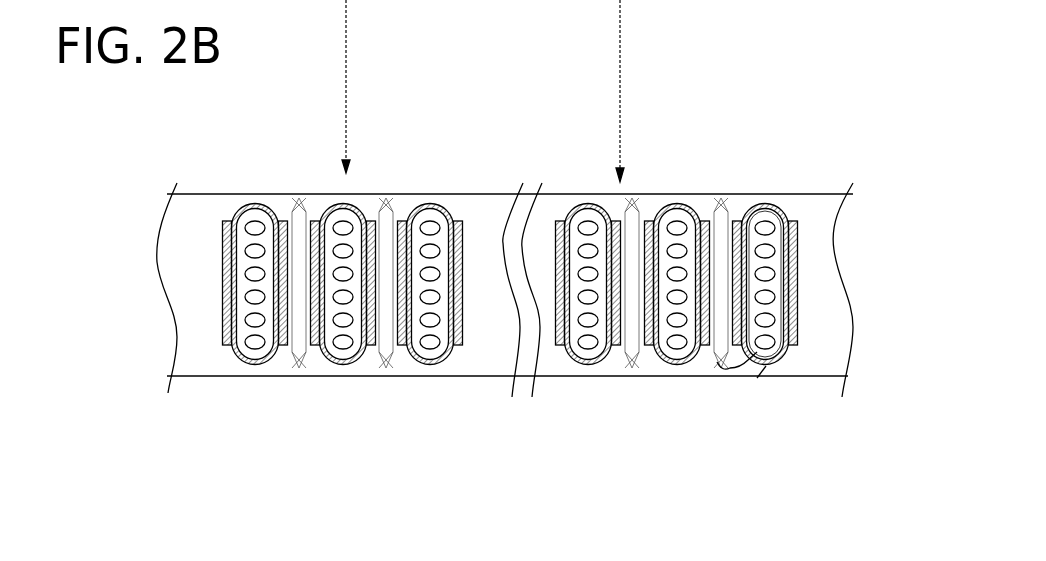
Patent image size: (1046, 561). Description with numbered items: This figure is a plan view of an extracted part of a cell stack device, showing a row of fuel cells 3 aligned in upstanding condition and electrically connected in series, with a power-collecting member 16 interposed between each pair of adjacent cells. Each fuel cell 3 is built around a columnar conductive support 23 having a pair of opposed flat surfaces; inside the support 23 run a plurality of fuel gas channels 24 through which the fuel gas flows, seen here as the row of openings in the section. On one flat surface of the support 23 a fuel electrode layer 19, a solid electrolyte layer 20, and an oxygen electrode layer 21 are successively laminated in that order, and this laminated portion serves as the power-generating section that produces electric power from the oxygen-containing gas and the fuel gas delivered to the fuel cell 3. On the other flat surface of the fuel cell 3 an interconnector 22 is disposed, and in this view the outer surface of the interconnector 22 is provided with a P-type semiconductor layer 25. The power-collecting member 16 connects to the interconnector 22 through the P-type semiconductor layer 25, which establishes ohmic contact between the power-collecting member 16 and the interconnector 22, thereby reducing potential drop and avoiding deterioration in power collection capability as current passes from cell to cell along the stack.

The fuel cell 3 is at (710, 283).
The power-collecting member 16 is at (730, 213).
The fuel electrode layer 19 is at (773, 349).
The solid electrolyte layer 20 is at (757, 378).
The oxygen electrode layer 21 is at (737, 222).
The interconnector 22 is at (785, 222).
The columnar conductive support 23 is at (717, 362).
The fuel gas channels 24 is at (745, 351).
The P-type semiconductor layer 25 is at (796, 333).